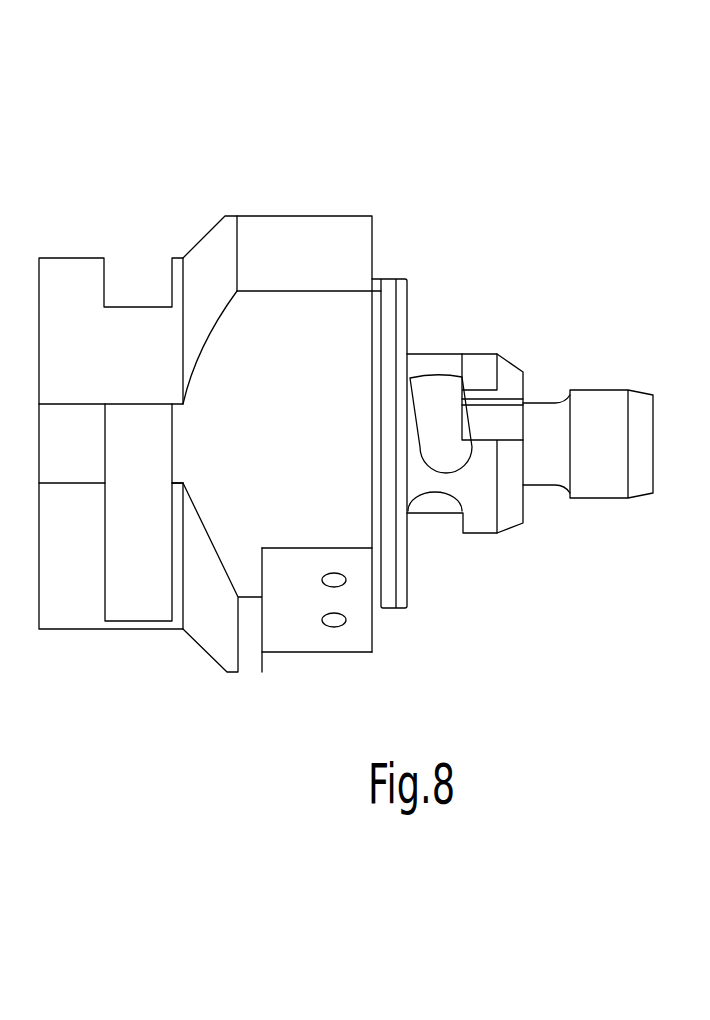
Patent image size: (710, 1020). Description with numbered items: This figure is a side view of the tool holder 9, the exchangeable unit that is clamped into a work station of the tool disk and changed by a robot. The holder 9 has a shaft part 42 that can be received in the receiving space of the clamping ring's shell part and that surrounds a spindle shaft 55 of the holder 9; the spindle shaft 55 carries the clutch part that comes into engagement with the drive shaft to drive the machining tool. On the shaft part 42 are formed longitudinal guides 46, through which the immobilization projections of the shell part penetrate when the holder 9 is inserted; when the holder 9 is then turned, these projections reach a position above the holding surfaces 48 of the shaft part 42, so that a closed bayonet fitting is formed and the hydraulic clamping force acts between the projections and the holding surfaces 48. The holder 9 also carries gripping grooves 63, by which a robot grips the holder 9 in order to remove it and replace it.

The holder 9 is at (423, 218).
The shaft part 42 is at (478, 502).
The longitudinal guides 46 is at (478, 400).
The holding surfaces 48 is at (460, 370).
The spindle shaft 55 is at (600, 418).
The gripping grooves 63 is at (105, 280).